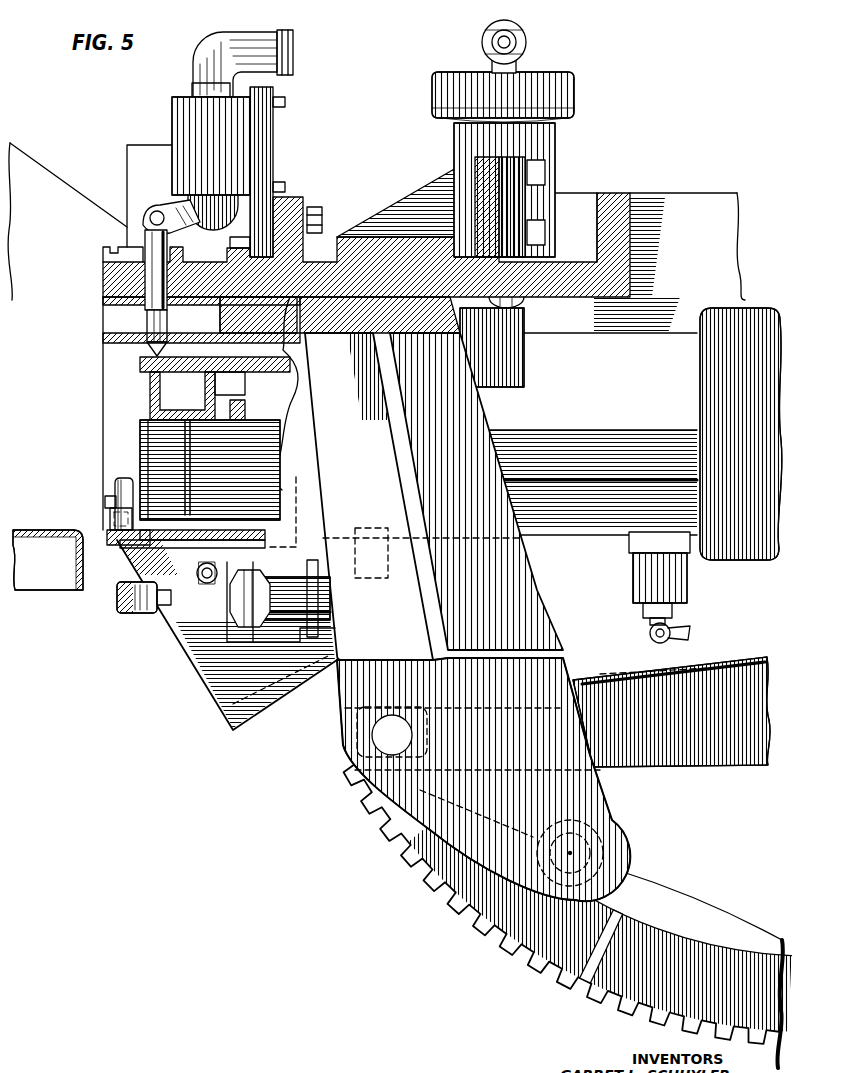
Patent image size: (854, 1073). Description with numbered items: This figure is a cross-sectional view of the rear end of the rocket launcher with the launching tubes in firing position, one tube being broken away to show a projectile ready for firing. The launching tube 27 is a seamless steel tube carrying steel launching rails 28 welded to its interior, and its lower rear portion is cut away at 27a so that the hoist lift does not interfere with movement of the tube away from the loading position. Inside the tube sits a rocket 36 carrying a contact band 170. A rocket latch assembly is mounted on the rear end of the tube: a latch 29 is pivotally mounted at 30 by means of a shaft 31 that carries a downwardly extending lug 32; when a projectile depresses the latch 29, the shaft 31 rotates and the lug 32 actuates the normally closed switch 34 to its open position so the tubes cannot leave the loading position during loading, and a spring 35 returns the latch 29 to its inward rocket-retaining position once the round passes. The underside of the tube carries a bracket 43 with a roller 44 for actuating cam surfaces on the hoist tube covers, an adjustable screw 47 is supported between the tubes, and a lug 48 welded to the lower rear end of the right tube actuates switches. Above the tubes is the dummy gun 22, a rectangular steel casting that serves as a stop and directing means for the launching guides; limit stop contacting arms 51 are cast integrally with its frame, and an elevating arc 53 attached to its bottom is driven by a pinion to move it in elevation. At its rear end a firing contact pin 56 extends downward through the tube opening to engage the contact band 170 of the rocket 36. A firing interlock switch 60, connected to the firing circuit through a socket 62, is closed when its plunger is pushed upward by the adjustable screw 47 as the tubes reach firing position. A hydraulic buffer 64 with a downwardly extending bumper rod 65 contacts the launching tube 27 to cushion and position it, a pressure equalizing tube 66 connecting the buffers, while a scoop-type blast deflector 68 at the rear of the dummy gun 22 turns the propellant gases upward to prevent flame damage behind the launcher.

The dummy gun 22 is at (320, 262).
The launching tube 27 is at (565, 526).
The cut-away portion of launcher tube 27a is at (106, 501).
The launching rail 28 is at (300, 340).
The latch 29 is at (116, 488).
The latch pivot mounting 30 is at (111, 531).
The shaft 31 is at (110, 510).
The lug 32 is at (233, 580).
The switch 34 is at (247, 628).
The spring 35 is at (203, 578).
The rocket 36 is at (220, 483).
The bracket 43 is at (118, 594).
The roller 44 is at (140, 616).
The adjustable screw 47 is at (147, 302).
The lug 48 is at (366, 578).
The limit stop contacting arm 51 is at (233, 704).
The elevating arc 53 is at (397, 834).
The firing contact pin 56 is at (156, 325).
The switch 60 is at (233, 135).
The socket 62 is at (262, 48).
The buffer 64 is at (546, 140).
The bumper rod 65 is at (525, 303).
The pressure equalizing tube 66 is at (526, 38).
The blast deflector 68 is at (45, 532).
The contact band 170 is at (150, 350).